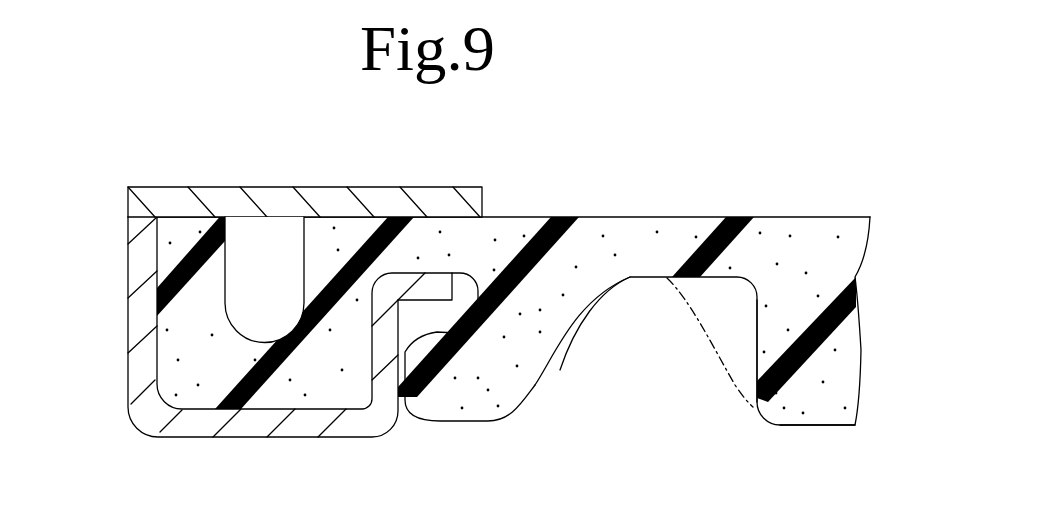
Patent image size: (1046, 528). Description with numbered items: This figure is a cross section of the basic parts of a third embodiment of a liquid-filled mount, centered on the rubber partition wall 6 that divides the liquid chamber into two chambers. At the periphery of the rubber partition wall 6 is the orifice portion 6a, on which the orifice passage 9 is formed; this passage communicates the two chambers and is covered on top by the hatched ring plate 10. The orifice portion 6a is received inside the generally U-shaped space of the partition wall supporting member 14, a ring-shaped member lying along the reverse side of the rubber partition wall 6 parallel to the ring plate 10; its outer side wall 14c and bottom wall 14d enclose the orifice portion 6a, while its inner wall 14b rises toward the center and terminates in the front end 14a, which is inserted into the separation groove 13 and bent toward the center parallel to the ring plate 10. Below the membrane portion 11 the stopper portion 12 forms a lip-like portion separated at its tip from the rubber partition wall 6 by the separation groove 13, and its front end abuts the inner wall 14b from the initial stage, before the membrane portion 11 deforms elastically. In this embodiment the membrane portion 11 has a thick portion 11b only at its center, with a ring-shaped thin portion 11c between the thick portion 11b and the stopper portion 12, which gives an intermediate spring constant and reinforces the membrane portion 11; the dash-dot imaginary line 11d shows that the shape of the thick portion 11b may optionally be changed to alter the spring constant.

The rubber partition wall 6 is at (829, 211).
The orifice portion 6a is at (172, 343).
The orifice passage 9 is at (253, 255).
The ring plate 10 is at (237, 203).
The membrane portion 11 is at (682, 240).
The thick portion 11b is at (808, 390).
The thin portion 11c is at (650, 313).
The imaginary line 11d is at (720, 367).
The stopper portion 12 is at (472, 421).
The separation groove 13 is at (462, 312).
The partition wall supporting member 14 is at (148, 440).
The front end 14a is at (438, 290).
The inner wall 14b is at (360, 396).
The side wall of channel 14c is at (128, 393).
The bottom wall of channel 14d is at (233, 423).